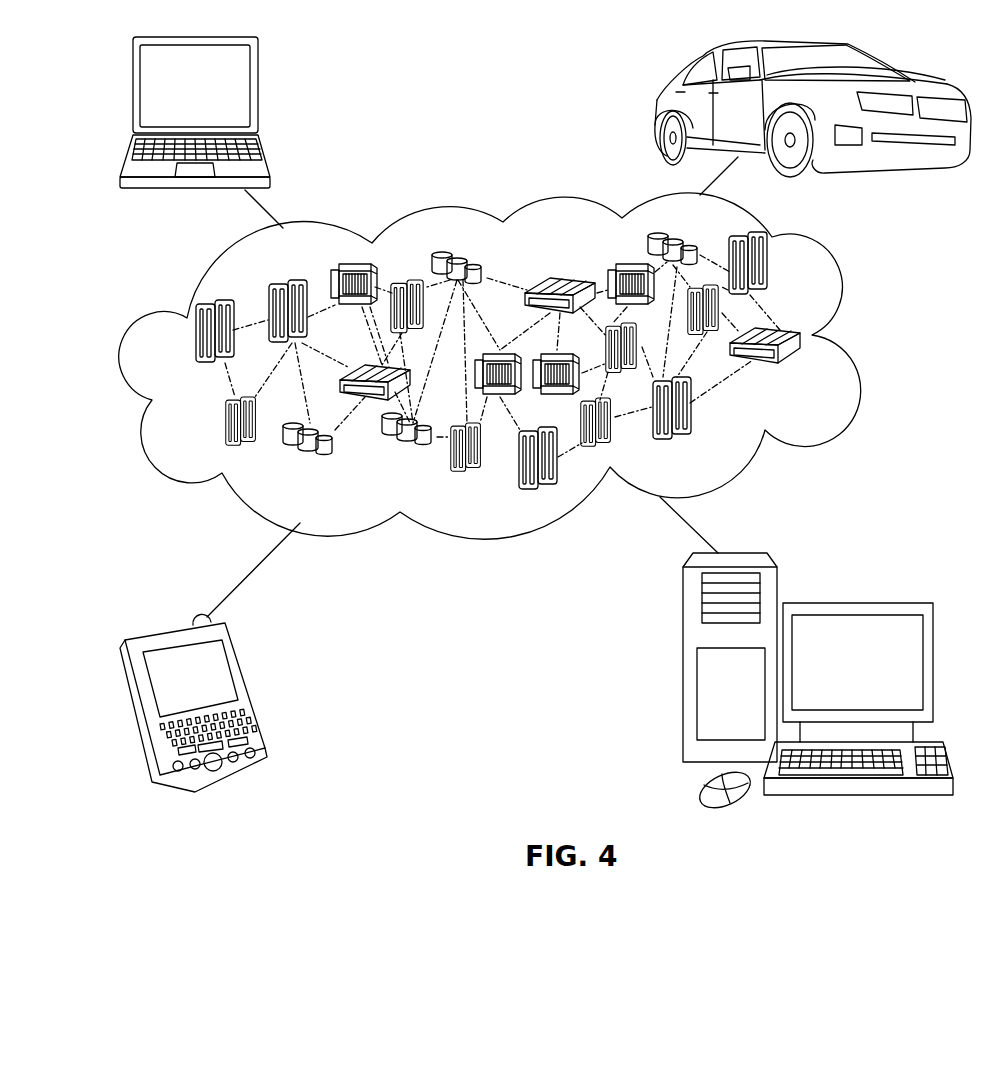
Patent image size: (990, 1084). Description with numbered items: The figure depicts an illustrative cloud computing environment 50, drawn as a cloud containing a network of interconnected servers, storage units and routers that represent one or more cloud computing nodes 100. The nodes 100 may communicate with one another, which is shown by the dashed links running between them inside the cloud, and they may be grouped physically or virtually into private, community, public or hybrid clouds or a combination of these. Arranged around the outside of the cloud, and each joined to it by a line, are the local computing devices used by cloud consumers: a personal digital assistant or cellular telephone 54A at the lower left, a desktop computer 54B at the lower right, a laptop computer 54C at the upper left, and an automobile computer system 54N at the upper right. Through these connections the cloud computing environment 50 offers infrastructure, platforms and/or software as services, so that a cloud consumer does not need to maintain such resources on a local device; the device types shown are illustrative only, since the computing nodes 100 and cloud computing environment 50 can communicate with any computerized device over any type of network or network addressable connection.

The laptop computer 54C is at (258, 93).
The automobile computer system 54N is at (655, 105).
The cloud computing environment 50 is at (857, 340).
The cloud computing nodes 100 is at (803, 368).
The personal digital assistant (PDA) or cellular telephone 54A is at (250, 690).
The desktop computer 54B is at (855, 603).